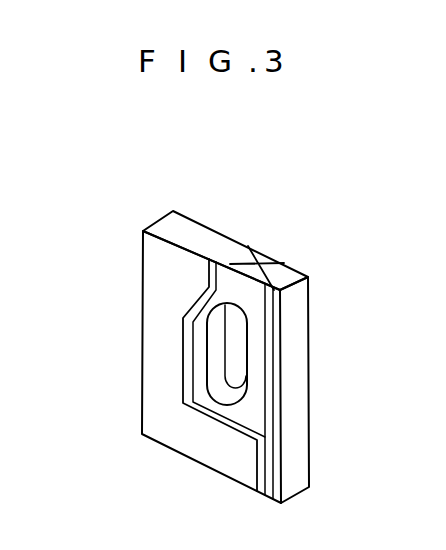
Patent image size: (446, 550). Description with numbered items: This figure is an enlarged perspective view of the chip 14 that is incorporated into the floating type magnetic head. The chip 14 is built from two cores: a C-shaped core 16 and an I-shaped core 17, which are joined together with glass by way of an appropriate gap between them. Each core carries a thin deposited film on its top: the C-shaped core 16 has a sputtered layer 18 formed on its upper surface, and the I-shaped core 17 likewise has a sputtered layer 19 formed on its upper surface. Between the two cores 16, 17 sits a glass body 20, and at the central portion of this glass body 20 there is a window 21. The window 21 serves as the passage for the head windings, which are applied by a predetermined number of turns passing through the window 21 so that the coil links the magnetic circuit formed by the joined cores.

The chip 14 is at (226, 232).
The C-shaped core 16 is at (170, 280).
The I-shaped core 17 is at (293, 358).
The sputtered layer 18 is at (182, 367).
The sputtered layer 19 is at (268, 410).
The glass body 20 is at (255, 307).
The window 21 is at (226, 384).